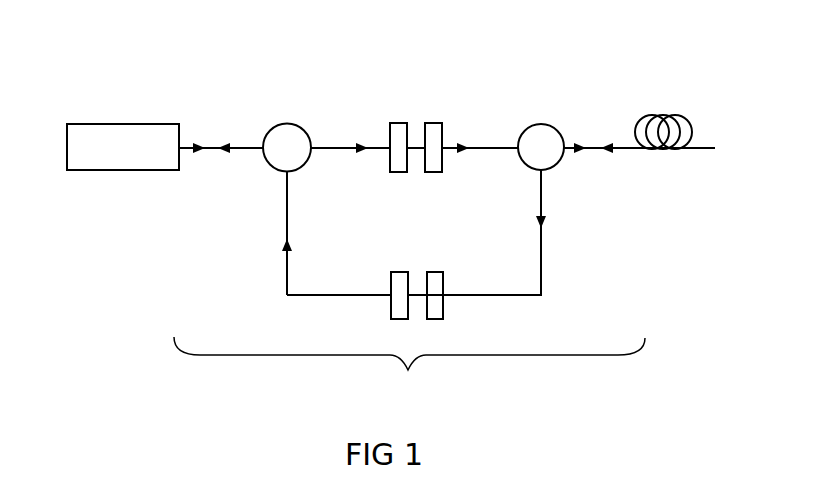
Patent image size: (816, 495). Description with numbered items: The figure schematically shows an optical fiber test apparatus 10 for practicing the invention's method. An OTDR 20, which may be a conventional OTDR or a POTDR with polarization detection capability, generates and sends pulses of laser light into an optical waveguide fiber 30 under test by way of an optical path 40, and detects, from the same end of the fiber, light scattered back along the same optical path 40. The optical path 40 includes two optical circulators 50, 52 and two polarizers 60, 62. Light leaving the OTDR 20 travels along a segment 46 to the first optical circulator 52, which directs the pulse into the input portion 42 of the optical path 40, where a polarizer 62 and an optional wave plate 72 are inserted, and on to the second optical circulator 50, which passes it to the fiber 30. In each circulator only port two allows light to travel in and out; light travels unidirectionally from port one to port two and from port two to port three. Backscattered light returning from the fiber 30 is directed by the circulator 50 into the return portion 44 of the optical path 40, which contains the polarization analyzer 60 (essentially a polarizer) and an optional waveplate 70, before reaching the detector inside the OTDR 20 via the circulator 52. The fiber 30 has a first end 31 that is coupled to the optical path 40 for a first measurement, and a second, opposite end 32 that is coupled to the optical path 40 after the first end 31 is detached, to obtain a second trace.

The apparatus 10 is at (176, 82).
The OTDR 20 is at (113, 124).
The optical waveguide fiber 30 is at (682, 115).
The first end 31 is at (620, 136).
The second end 32 is at (715, 136).
The optical path 40 is at (409, 366).
The input portion 42 is at (455, 145).
The return portion 44 is at (543, 242).
The optical path from source 46 is at (250, 152).
The optical circulator 50 is at (533, 123).
The optical circulator 52 is at (305, 130).
The polarization analyzer 60 is at (390, 318).
The polarizer 62 is at (392, 123).
The waveplate 70 is at (443, 318).
The wave plate 72 is at (437, 123).